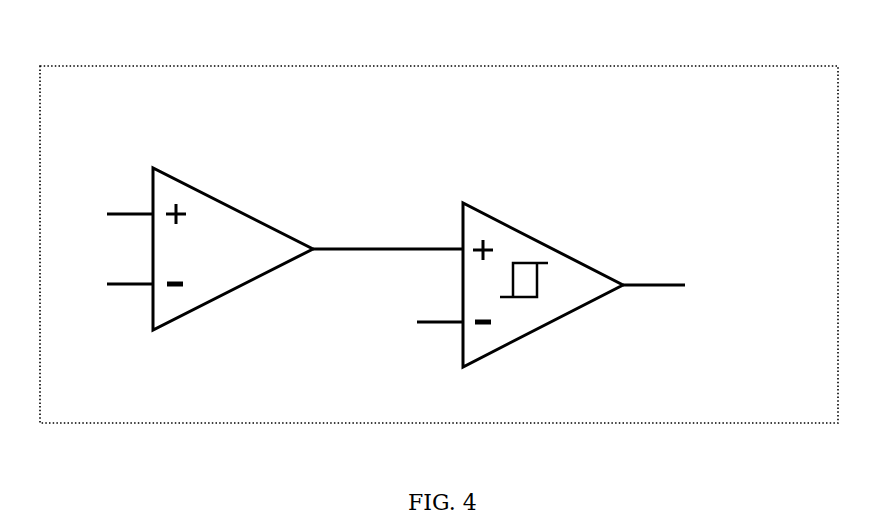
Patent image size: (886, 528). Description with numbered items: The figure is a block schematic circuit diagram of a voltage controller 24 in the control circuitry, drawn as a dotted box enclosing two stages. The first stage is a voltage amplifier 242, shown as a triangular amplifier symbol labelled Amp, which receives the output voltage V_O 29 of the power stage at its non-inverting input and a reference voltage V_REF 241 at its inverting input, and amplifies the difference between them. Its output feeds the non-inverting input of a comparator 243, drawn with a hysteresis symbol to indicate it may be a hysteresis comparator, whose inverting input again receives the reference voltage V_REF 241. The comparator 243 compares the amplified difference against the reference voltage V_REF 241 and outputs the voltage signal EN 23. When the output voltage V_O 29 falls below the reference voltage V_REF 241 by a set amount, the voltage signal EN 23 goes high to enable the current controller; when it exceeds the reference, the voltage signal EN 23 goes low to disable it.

The voltage controller 24 is at (100, 61).
The output voltage V_O 29 is at (81, 195).
The voltage amplifier 242 is at (243, 194).
The reference voltage V_REF 241 is at (72, 300).
The comparator 243 is at (541, 230).
The voltage signal EN 23 is at (748, 262).